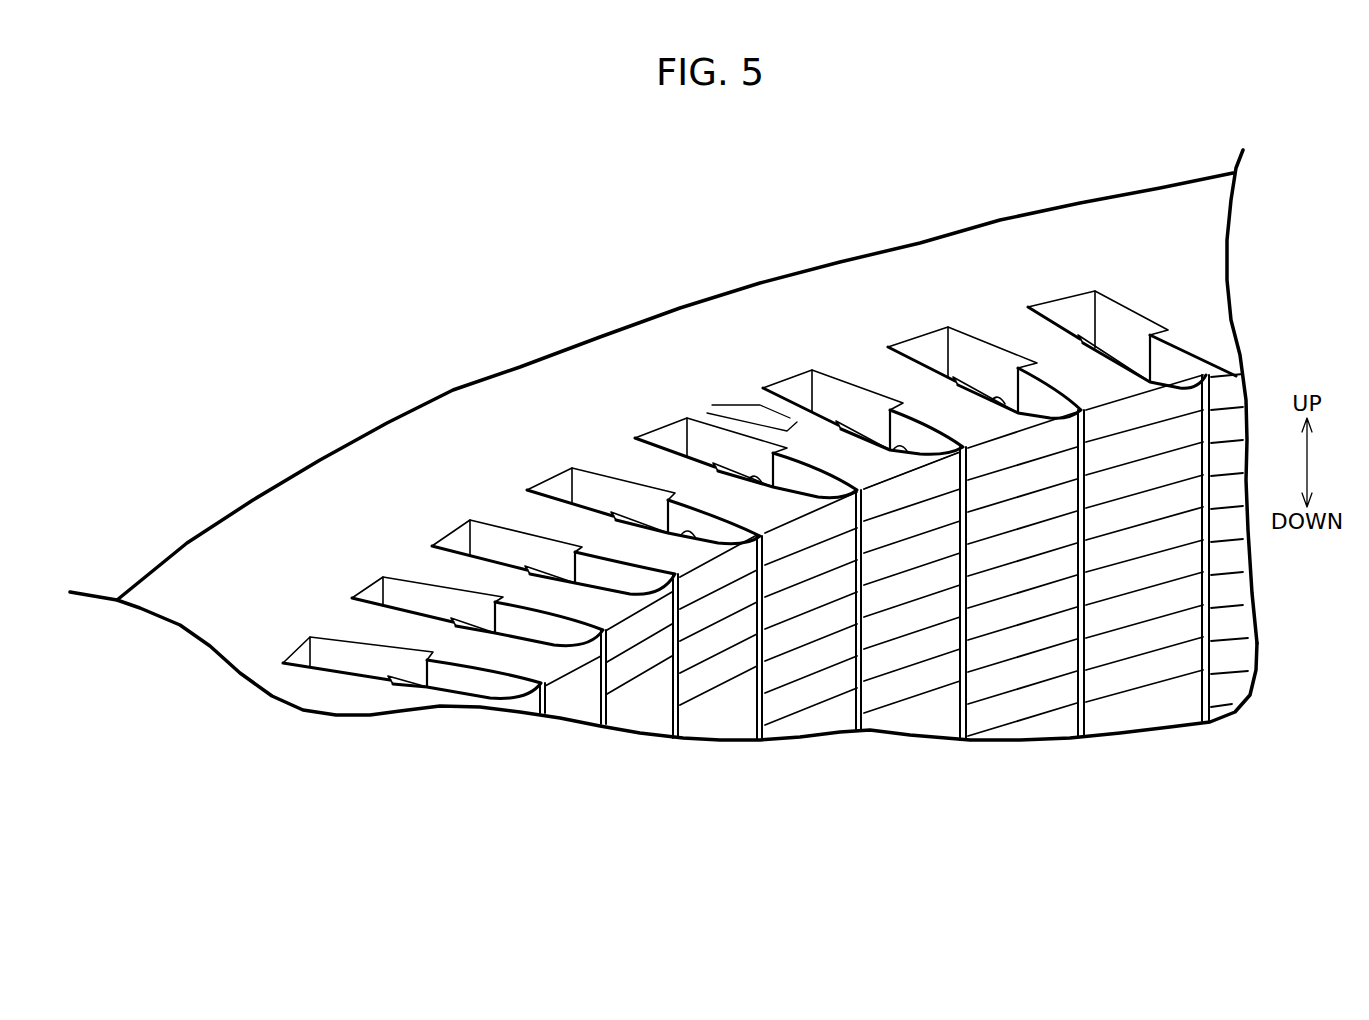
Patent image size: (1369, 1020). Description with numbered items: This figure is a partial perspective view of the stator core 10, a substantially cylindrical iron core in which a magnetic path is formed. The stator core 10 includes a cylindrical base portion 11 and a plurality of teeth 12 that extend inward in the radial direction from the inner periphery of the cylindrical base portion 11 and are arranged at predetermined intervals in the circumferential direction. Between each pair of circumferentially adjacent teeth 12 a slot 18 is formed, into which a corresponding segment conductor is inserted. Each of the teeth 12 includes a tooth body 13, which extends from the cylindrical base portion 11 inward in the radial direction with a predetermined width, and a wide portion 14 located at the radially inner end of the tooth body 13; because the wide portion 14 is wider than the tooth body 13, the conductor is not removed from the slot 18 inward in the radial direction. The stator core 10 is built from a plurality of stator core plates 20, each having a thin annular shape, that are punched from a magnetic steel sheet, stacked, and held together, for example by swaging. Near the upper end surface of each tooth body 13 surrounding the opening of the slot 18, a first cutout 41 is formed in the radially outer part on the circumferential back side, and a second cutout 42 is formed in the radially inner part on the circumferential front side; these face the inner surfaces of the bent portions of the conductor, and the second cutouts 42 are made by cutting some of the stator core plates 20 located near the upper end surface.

The stator core 10 is at (509, 346).
The cylindrical base portion 11 is at (303, 634).
The teeth 12 is at (1146, 712).
The tooth body 13 is at (768, 400).
The wide portion 14 is at (893, 467).
The slot 18 is at (932, 353).
The stator core plates 20 is at (1242, 580).
The first cutout 41 is at (993, 365).
The second cutout 42 is at (893, 450).